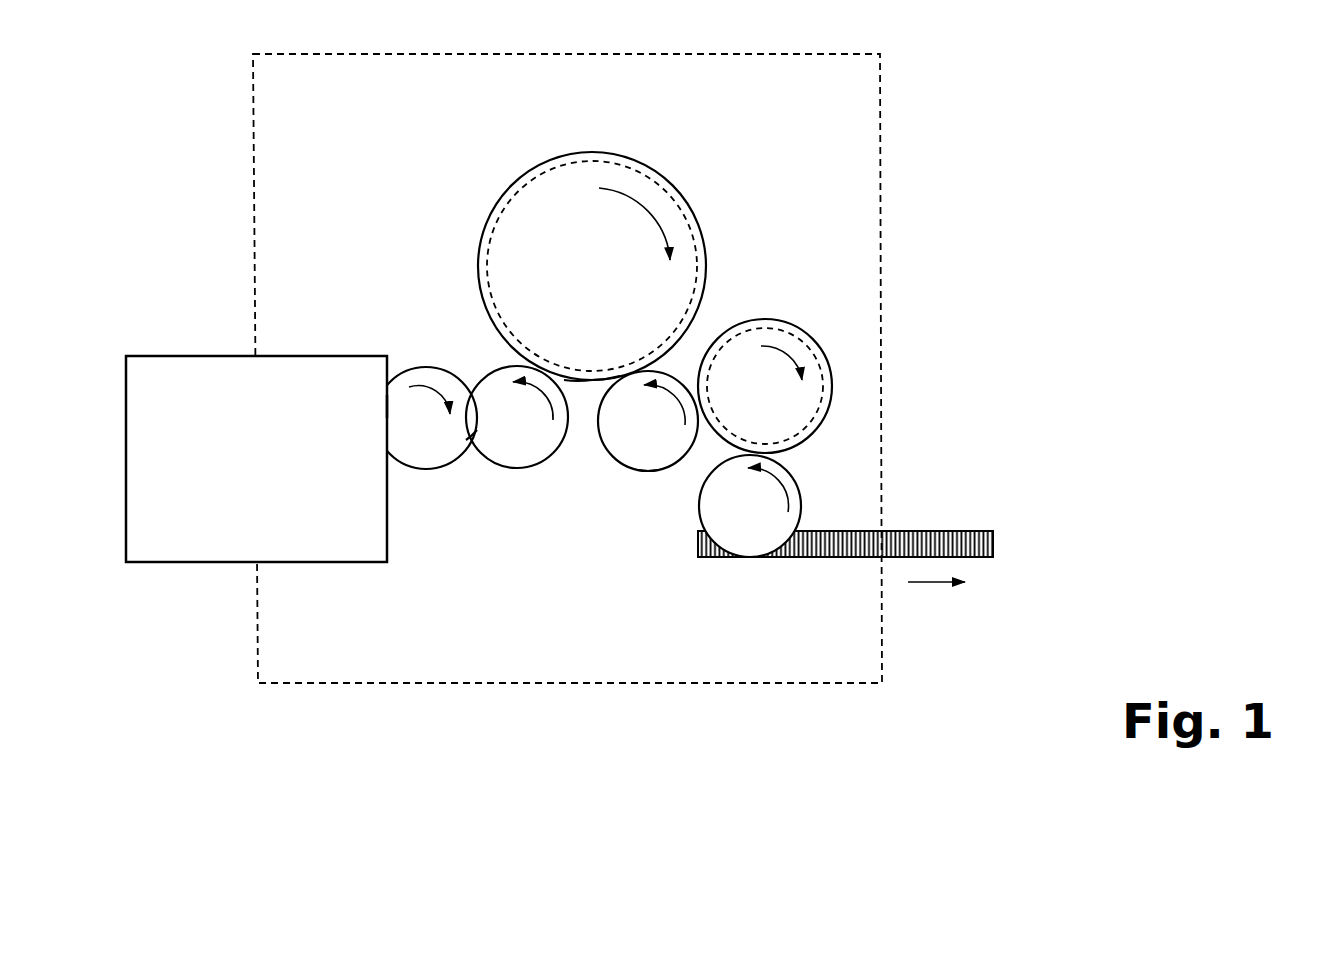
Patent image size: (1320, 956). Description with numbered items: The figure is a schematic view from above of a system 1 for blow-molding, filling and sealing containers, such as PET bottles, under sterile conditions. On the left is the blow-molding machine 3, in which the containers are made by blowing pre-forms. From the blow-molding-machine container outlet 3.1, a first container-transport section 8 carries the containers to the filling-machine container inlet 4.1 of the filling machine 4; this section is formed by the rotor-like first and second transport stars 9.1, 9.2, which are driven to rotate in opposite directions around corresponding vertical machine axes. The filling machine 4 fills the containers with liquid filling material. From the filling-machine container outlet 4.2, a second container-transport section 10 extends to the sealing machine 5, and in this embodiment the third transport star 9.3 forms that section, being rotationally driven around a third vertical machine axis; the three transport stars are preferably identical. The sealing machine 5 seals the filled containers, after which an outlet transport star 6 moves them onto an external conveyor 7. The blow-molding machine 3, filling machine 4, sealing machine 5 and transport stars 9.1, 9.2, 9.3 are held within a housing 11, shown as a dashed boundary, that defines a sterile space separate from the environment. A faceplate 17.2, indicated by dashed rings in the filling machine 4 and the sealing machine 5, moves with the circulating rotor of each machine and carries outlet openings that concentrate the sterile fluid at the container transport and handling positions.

The system 1 is at (967, 156).
The blow-molding machine 3 is at (256, 459).
The blow-molding-machine container outlet 3.1 is at (384, 403).
The filling machine 4 is at (490, 214).
The filling-machine container inlet 4.1 is at (502, 356).
The filling-machine container outlet 4.2 is at (634, 352).
The sealing machine 5 is at (833, 371).
The outlet transport star 6 is at (752, 524).
The external conveyor 7 is at (970, 530).
The first container-transport section 8 is at (481, 494).
The first transport star 9.1 is at (423, 443).
The second transport star 9.2 is at (516, 443).
The third transport star 9.3 is at (633, 440).
The second container-transport section 10 is at (659, 494).
The housing 11 is at (253, 181).
The faceplate 17.2 is at (655, 186).